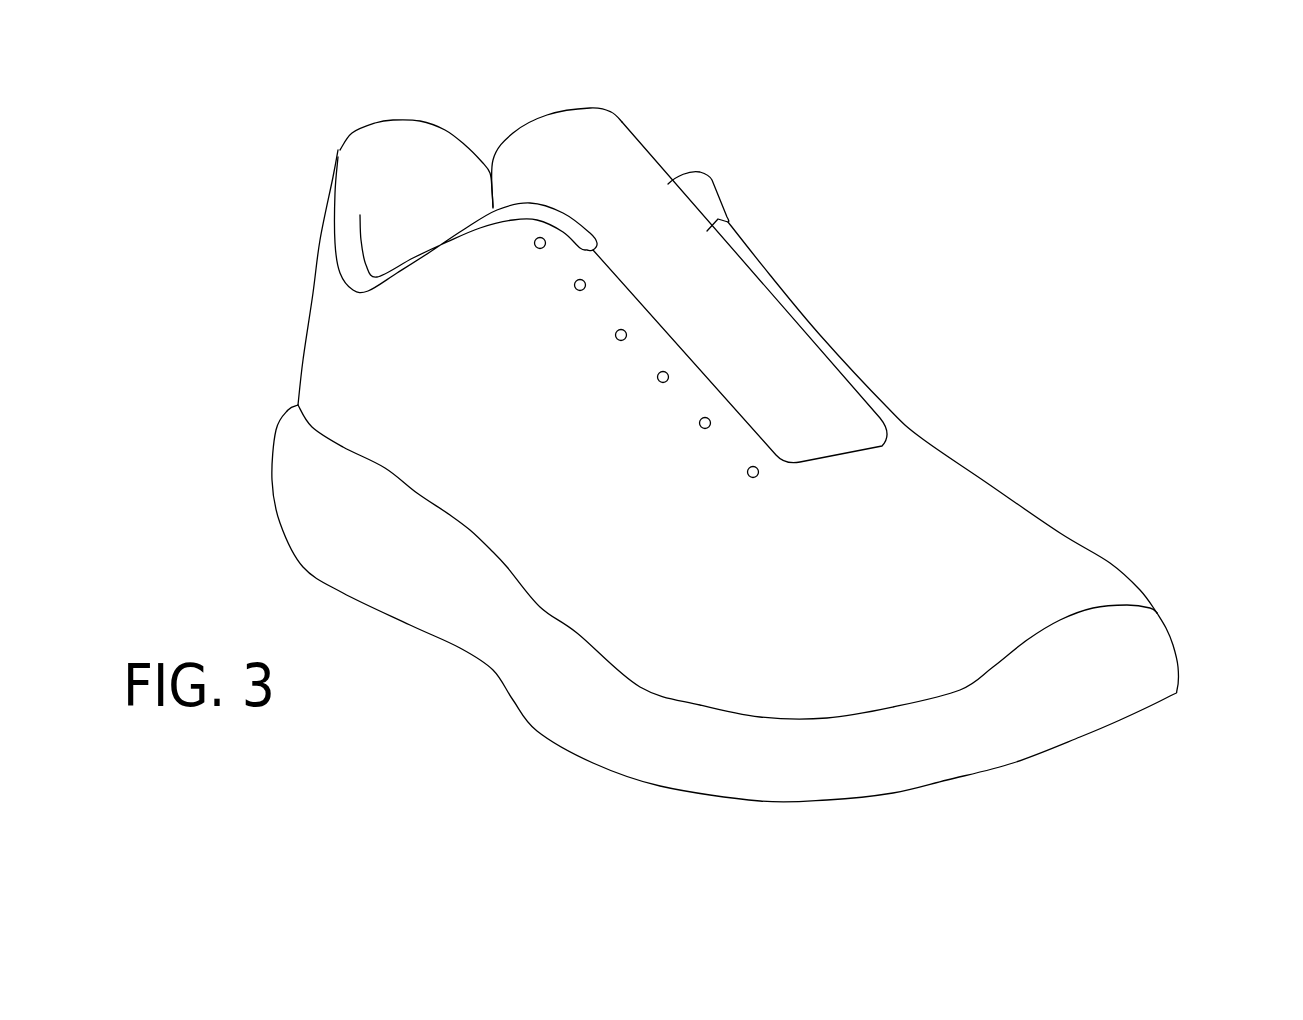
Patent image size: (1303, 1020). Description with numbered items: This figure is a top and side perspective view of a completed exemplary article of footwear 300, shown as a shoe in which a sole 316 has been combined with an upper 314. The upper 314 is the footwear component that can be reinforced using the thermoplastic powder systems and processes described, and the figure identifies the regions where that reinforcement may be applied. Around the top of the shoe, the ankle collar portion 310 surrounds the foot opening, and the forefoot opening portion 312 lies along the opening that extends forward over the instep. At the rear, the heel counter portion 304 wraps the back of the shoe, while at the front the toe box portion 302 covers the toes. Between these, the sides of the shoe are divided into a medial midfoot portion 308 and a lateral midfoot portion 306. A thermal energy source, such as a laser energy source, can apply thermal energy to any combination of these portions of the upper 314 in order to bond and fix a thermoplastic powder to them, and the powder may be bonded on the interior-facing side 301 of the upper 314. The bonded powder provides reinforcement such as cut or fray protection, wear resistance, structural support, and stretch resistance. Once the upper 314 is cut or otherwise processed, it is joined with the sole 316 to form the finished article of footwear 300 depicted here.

The article of footwear 300 is at (187, 155).
The interior-facing side 301 is at (418, 151).
The toe box portion 302 is at (1162, 568).
The heel counter portion 304 is at (297, 353).
The lateral midfoot portion 306 is at (581, 457).
The medial midfoot portion 308 is at (903, 368).
The ankle collar portion 310 is at (337, 150).
The forefoot opening portion 312 is at (667, 185).
The upper 314 is at (987, 450).
The sole 316 is at (432, 668).